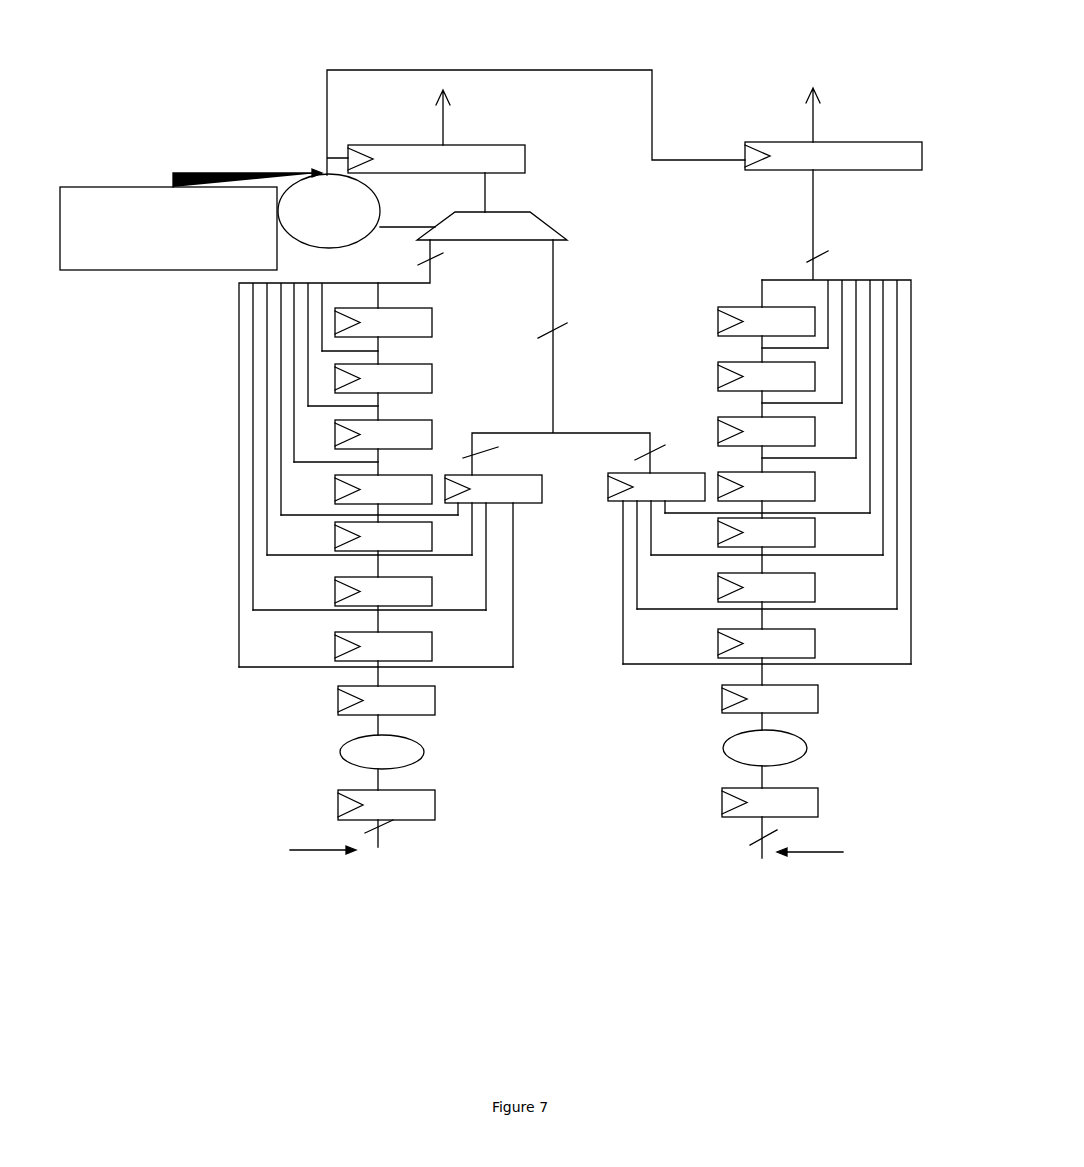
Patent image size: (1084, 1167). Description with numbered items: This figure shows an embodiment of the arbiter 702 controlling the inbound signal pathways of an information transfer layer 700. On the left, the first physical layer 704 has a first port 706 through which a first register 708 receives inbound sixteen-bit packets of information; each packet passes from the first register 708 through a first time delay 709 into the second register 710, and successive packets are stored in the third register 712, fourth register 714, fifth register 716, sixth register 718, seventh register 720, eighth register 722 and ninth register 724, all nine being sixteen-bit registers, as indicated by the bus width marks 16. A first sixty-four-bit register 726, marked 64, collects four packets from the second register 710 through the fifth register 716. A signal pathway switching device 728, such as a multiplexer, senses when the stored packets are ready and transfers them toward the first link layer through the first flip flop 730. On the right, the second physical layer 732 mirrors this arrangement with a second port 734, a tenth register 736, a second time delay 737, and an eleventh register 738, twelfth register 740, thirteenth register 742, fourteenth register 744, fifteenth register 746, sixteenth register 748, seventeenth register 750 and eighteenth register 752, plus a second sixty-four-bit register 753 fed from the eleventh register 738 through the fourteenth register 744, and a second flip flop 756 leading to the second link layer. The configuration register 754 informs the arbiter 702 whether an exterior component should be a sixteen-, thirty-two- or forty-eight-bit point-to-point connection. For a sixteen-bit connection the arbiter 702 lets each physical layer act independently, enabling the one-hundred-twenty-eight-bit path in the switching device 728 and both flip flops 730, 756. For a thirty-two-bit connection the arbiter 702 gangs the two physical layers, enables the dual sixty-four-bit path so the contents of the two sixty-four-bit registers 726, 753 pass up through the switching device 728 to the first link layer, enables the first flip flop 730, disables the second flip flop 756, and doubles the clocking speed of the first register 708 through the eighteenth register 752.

The information transfer layer 700 is at (491, 474).
The arbiter 702 is at (350, 211).
The first physical layer 704 is at (377, 888).
The first port 706 is at (302, 850).
The first register 708 is at (386, 805).
The first time delay 709 is at (382, 752).
The second register 710 is at (386, 700).
The third register 712 is at (383, 646).
The fourth register 714 is at (383, 591).
The fifth register 716 is at (383, 536).
The sixth register 718 is at (383, 489).
The seventh register 720 is at (383, 434).
The eighth register 722 is at (383, 378).
The ninth register 724 is at (383, 322).
The first 64-bit register 726 is at (493, 489).
The signal pathway switching device 728 is at (492, 226).
The first flip flop 730 is at (436, 159).
The second physical layer 732 is at (773, 902).
The second port 734 is at (834, 852).
The tenth register 736 is at (770, 802).
The second time delay 737 is at (765, 748).
The eleventh register 738 is at (770, 699).
The twelfth register 740 is at (766, 643).
The thirteenth register 742 is at (766, 587).
The fourteenth register 744 is at (766, 532).
The fifteenth register 746 is at (766, 486).
The sixteenth register 748 is at (766, 431).
The seventeenth register 750 is at (766, 376).
The eighteenth register 752 is at (766, 321).
The second 64-bit register 753 is at (656, 487).
The configuration register 754 is at (191, 219).
The second flip flop 756 is at (833, 156).
The 16-bit bus width 16 is at (596, 549).
The 64-bit bus width 64 is at (552, 448).